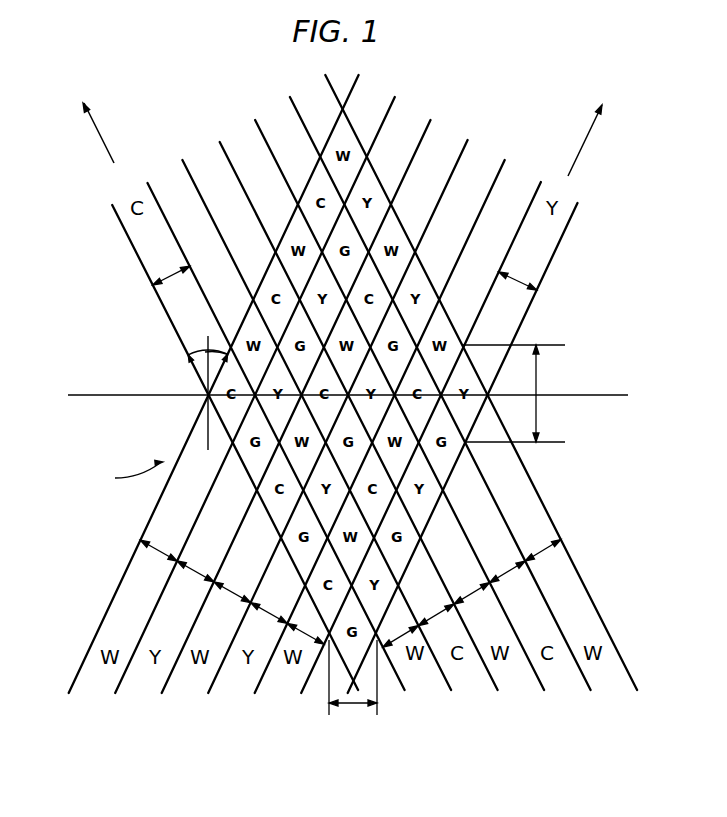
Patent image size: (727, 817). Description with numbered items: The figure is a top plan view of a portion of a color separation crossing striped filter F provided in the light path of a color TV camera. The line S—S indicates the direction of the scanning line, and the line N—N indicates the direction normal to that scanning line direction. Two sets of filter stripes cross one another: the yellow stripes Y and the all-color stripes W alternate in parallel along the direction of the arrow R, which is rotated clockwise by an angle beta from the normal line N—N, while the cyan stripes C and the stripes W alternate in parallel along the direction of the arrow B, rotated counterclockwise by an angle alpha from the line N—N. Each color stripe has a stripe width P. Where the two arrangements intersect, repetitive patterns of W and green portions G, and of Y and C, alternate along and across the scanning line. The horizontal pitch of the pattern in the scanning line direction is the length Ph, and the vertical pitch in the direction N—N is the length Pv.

The scanning line direction S is at (347, 395).
The normal line N is at (208, 395).
The extending direction arrow B is at (99, 131).
The extending direction arrow R is at (583, 142).
The color separation crossing striped filter F is at (127, 478).
The stripe width P is at (350, 453).
The longitudinal pitch Pv is at (538, 375).
The transverse pitch Ph is at (355, 704).